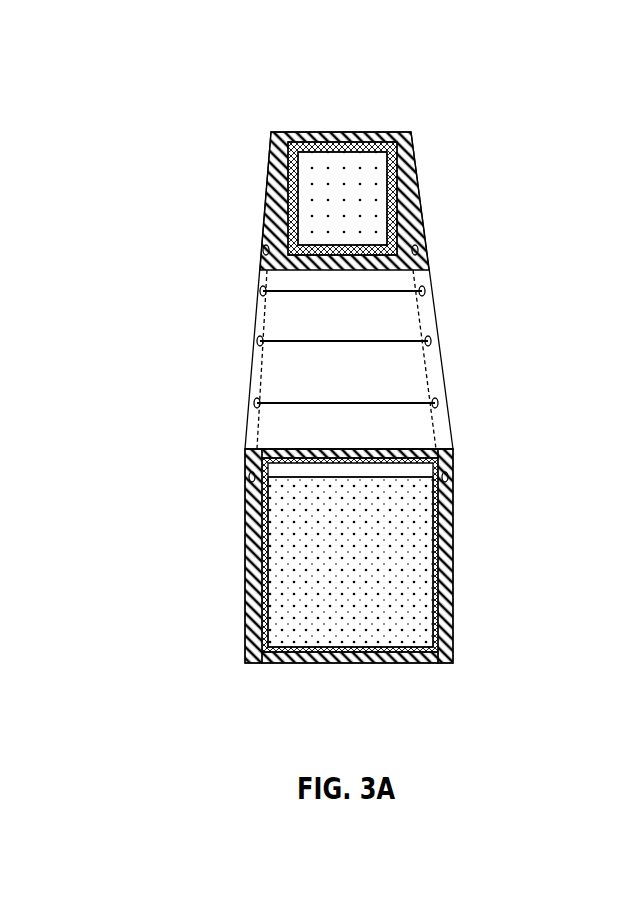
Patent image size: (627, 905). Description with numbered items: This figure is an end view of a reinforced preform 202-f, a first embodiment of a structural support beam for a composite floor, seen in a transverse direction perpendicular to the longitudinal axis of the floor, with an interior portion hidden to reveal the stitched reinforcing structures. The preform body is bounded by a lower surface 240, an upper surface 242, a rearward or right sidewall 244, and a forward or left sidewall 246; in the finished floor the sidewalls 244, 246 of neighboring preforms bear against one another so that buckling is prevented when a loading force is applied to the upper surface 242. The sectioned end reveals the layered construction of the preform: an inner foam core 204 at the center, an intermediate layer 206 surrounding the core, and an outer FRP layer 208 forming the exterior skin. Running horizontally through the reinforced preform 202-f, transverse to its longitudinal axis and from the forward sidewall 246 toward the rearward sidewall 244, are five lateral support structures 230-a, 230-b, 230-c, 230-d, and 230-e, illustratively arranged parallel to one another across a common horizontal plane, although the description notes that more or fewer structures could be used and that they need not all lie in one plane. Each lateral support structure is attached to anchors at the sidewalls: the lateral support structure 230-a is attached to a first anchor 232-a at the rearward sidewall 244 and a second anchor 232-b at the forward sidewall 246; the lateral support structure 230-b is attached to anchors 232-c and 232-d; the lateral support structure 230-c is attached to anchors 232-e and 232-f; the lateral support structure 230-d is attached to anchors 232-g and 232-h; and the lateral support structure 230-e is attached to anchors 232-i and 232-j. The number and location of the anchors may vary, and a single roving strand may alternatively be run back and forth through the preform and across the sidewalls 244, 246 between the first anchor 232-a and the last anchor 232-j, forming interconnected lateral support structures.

The reinforced preform 202-f is at (430, 122).
The lateral support structure 230-e is at (388, 243).
The lateral support structure 230-d is at (393, 291).
The lateral support structure 230-c is at (402, 341).
The lateral support structure 230-b is at (400, 403).
The lateral support structure 230-a is at (398, 475).
The anchor 232-j is at (263, 250).
The anchor 232-i is at (418, 250).
The anchor 232-h is at (260, 291).
The anchor 232-g is at (425, 291).
The anchor 232-f is at (257, 341).
The anchor 232-e is at (431, 341).
The anchor 232-d is at (254, 403).
The anchor 232-c is at (438, 403).
The second anchor 232-b is at (249, 477).
The first anchor 232-a is at (452, 477).
The upper surface 242 is at (283, 446).
The forward sidewall 246 is at (233, 553).
The rearward sidewall 244 is at (457, 558).
The lower surface 240 is at (357, 672).
The outer FRP layer 208 is at (252, 660).
The intermediate layer 206 is at (307, 650).
The inner foam core 204 is at (412, 635).